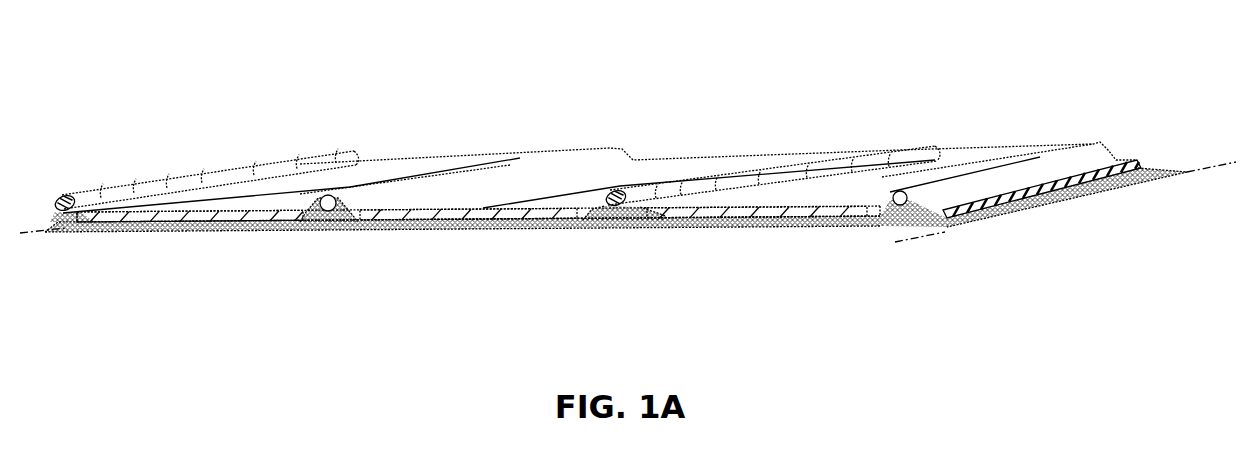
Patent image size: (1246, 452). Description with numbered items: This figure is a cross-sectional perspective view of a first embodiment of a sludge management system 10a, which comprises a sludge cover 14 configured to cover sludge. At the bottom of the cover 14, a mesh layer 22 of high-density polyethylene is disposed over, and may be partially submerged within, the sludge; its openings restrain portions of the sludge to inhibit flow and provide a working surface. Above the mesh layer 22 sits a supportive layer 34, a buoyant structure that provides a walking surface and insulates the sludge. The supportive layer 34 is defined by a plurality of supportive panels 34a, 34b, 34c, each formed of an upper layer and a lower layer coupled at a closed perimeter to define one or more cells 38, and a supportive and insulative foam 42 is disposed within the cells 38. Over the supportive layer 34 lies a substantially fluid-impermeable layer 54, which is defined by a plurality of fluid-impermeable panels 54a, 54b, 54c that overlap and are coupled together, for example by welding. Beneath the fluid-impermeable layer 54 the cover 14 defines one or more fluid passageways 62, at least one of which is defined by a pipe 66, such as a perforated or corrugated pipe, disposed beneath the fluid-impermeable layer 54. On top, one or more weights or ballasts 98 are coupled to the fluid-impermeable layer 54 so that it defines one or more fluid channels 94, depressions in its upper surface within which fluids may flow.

The sludge management system 10a is at (212, 128).
The sludge cover 14 is at (1116, 124).
The mesh layer 22 is at (900, 230).
The supportive layer 34 is at (807, 213).
The supportive panel 34a is at (207, 220).
The supportive panel 34b is at (443, 212).
The supportive panel 34c is at (730, 210).
The cell 38 is at (445, 210).
The foam 42 is at (497, 213).
The substantially fluid-impermeable layer 54 is at (585, 153).
The substantially fluid-impermeable panel 54a is at (325, 160).
The substantially fluid-impermeable panel 54b is at (657, 172).
The substantially fluid-impermeable panel 54c is at (887, 190).
The fluid passageway 62 is at (327, 205).
The pipe 66 is at (970, 218).
The fluid channel 94 is at (604, 212).
The weight or ballast 98 is at (147, 190).